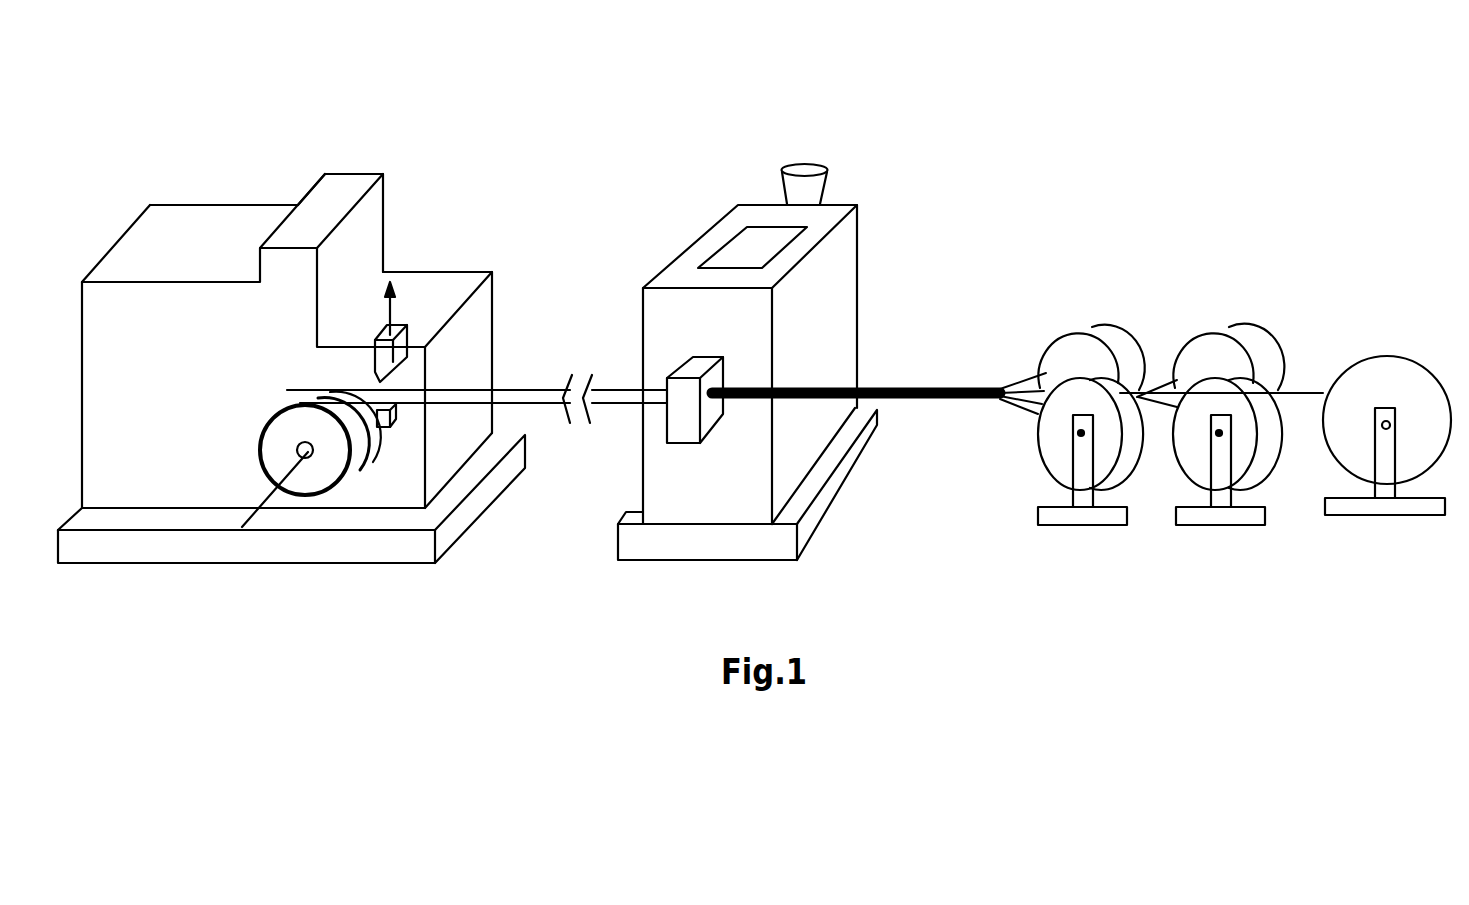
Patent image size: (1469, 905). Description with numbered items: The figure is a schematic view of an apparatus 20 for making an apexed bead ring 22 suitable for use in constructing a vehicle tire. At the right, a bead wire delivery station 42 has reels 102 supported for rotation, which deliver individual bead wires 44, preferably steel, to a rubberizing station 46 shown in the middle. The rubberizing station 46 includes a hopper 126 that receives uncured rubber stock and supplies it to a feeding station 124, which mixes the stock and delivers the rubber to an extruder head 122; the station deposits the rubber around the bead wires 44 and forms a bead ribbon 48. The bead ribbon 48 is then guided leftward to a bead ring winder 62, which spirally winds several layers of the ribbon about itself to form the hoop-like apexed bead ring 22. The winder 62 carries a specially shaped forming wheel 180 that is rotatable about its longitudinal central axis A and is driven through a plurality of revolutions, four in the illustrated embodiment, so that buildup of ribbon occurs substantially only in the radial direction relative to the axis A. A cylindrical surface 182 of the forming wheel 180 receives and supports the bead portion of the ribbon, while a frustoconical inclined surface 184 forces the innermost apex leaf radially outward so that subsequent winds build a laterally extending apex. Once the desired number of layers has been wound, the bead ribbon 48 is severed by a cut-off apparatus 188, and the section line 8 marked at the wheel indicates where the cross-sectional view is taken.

The apparatus 20 is at (346, 113).
The apexed bead ring 22 is at (380, 490).
The bead wire delivery station 42 is at (1251, 288).
The bead wire 44 is at (1023, 382).
The rubberizing station 46 is at (693, 575).
The bead ribbon 48 is at (539, 378).
The bead ring winder 62 is at (403, 581).
The reel 102 is at (1055, 458).
The extruder head 122 is at (685, 428).
The feeding station 124 is at (683, 265).
The hopper 126 is at (793, 183).
The forming wheel 180 is at (318, 478).
The cylindrical surface 182 is at (270, 407).
The inclined surface 184 is at (277, 405).
The cut-off apparatus 188 is at (403, 331).
The section line 8- 8 is at (307, 370).
The longitudinal central axis A is at (268, 495).